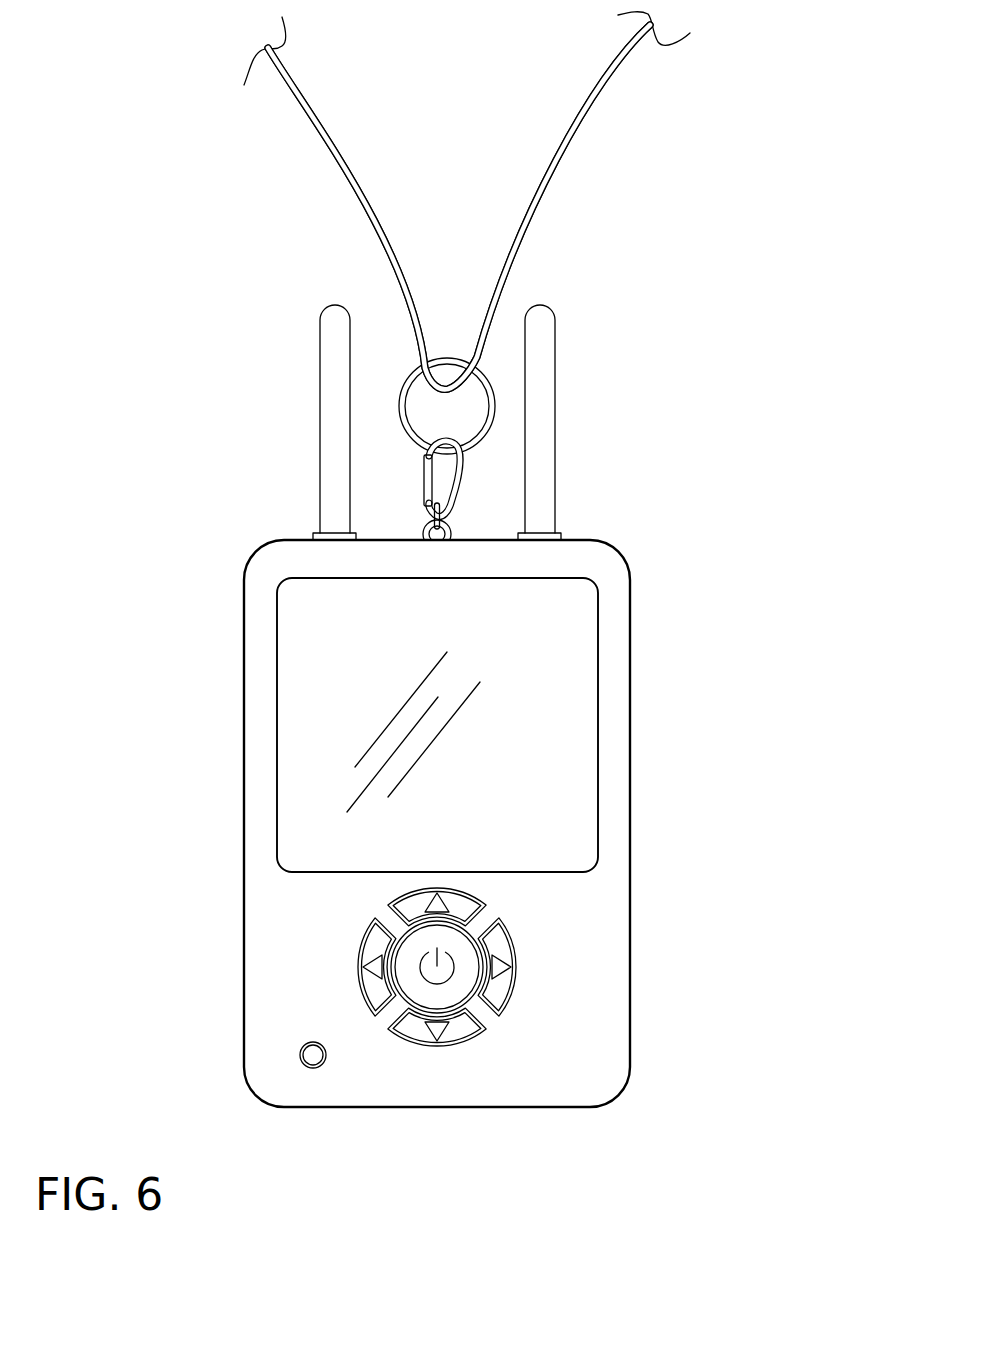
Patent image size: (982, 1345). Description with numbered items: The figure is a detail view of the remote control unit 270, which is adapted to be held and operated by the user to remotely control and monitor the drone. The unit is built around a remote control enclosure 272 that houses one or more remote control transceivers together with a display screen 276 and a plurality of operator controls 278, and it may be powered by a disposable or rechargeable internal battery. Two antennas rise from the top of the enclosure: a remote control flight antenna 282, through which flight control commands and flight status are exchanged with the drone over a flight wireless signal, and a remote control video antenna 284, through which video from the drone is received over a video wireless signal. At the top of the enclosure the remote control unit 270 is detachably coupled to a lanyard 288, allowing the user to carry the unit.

The remote control unit 270 is at (462, 618).
The remote control enclosure 272 is at (246, 931).
The display screen 276 is at (302, 691).
The operator controls 278 is at (523, 1127).
The remote control flight antenna 282 is at (545, 418).
The remote control video antenna 284 is at (330, 400).
The lanyard 288 is at (557, 143).